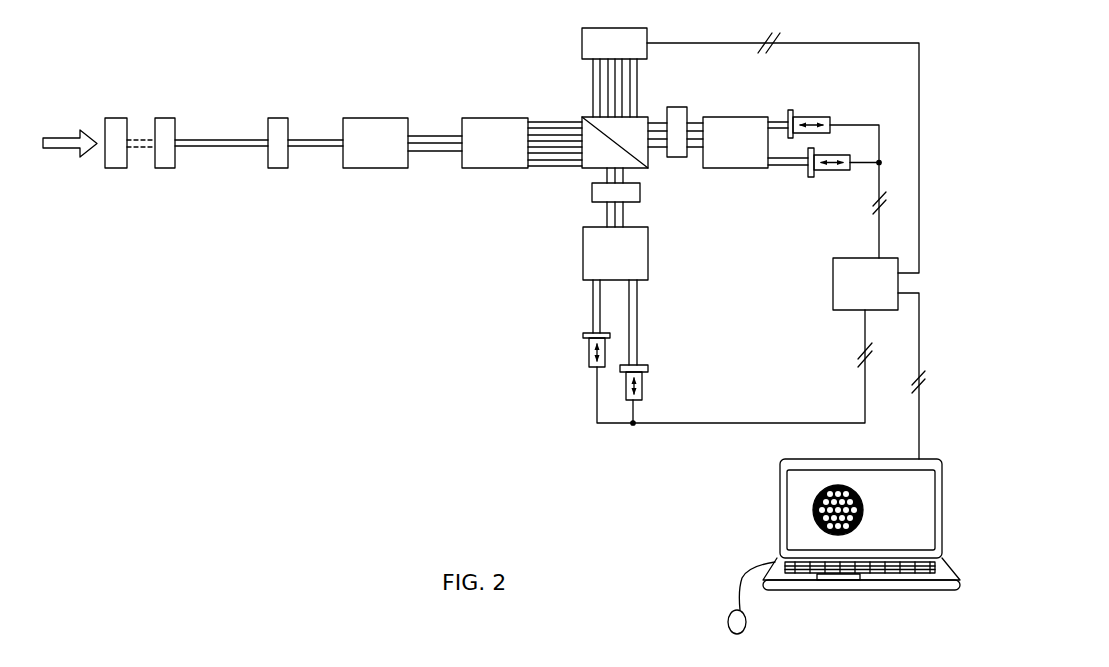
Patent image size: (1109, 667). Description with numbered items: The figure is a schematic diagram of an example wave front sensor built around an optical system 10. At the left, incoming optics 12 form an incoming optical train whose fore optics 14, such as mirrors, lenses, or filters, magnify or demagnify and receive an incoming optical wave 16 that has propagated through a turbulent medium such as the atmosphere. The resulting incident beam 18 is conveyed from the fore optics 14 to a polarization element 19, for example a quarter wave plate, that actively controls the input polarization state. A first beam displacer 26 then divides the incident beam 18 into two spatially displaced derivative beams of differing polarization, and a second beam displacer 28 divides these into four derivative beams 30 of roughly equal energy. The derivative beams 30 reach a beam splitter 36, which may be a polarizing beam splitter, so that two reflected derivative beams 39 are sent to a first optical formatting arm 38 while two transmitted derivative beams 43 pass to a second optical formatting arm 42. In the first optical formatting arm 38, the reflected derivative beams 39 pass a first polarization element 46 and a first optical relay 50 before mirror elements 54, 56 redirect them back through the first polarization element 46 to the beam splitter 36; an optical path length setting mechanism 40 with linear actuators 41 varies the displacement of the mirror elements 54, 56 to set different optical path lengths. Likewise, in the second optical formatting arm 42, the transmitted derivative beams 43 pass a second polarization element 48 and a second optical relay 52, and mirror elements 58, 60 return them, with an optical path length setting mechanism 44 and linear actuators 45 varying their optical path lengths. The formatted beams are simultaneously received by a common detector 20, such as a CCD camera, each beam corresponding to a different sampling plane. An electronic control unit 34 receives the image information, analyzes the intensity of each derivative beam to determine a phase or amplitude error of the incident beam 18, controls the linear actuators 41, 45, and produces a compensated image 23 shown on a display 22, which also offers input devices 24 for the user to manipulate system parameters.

The optical system 10 is at (297, 273).
The incoming optics 12 is at (297, 95).
The fore optics 14 is at (137, 172).
The incoming optical wave 16 is at (58, 150).
The incident beam 18 is at (222, 148).
The polarization element 19 is at (272, 170).
The detector 20 is at (582, 45).
The display 22 is at (780, 460).
The compensated image 23 is at (808, 520).
The input devices 24 is at (797, 576).
The first beam displacer 26 is at (368, 170).
The second beam displacer 28 is at (475, 170).
The derivative beams 30 is at (548, 170).
The electronic control unit 34 is at (833, 280).
The beam splitter 36 is at (584, 117).
The first optical formatting arm 38 is at (568, 297).
The reflected derivative beams 39 is at (597, 173).
The optical path length setting mechanism 40 is at (583, 385).
The linear actuators 41 is at (589, 352).
The second optical formatting arm 42 is at (717, 183).
The transmitted derivative beams 43 is at (655, 110).
The optical path length setting mechanism 44 is at (850, 112).
The linear actuators 45 is at (828, 117).
The first polarization element 46 is at (640, 196).
The second polarization element 48 is at (675, 157).
The first optical relay 50 is at (648, 246).
The second optical relay 52 is at (730, 117).
The mirror element 54 is at (583, 335).
The mirror element 56 is at (648, 368).
The mirror element 58 is at (812, 177).
The mirror element 60 is at (790, 110).